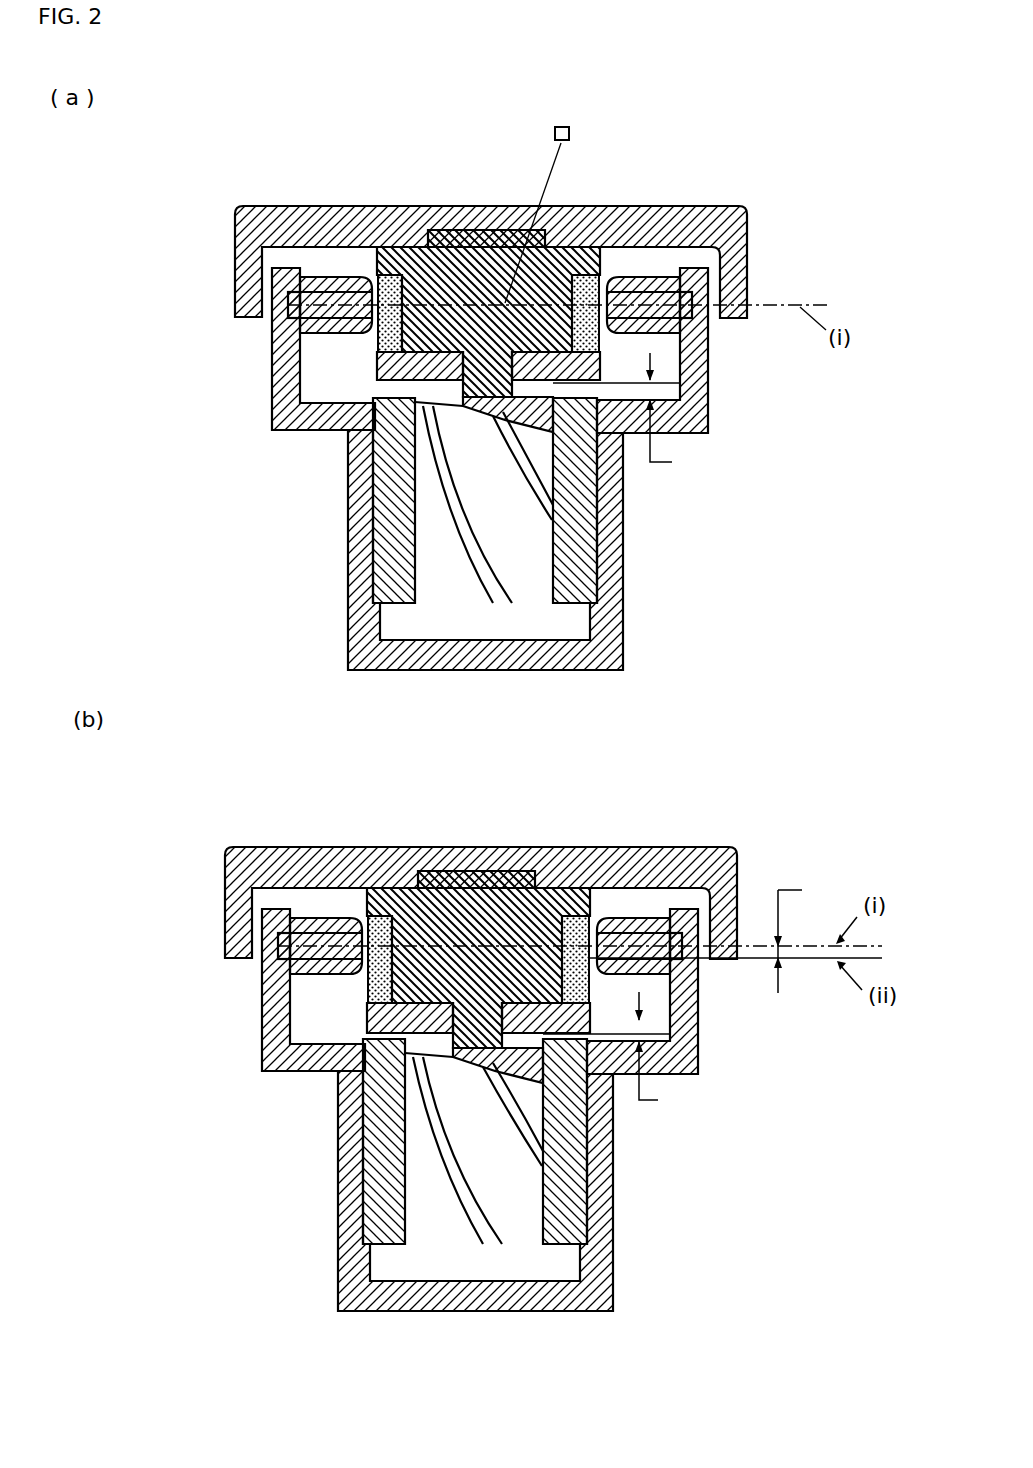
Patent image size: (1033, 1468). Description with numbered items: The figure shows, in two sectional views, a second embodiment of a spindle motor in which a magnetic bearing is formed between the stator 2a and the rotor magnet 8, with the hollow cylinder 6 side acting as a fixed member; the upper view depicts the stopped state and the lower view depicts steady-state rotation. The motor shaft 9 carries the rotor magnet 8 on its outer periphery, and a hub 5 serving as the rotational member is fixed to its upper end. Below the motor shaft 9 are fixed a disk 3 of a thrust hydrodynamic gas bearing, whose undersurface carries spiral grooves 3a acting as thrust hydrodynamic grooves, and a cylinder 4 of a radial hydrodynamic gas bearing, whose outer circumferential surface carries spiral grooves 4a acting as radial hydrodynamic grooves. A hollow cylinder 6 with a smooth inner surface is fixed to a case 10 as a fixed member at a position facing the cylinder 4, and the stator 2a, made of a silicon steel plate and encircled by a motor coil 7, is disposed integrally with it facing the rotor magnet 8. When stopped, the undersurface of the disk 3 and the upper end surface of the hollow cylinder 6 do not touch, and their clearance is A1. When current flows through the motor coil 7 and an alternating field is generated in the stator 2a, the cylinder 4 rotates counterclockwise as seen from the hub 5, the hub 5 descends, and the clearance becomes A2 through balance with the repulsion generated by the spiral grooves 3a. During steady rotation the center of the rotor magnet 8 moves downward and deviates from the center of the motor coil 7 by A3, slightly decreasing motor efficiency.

The stator 2a is at (690, 330).
The disk 3 is at (372, 368).
The spiral grooves 3a is at (333, 427).
The cylinder 4 is at (452, 585).
The spiral grooves 4a is at (543, 515).
The hub 5 is at (692, 222).
The hollow cylinder 6 is at (383, 497).
The motor coil 7 is at (320, 278).
The rotor magnet 8 is at (390, 276).
The motor shaft 9 is at (470, 252).
The case 10 is at (362, 590).
The clearance A1 is at (674, 414).
The clearance A2 is at (663, 1053).
The deviation A3 is at (802, 937).